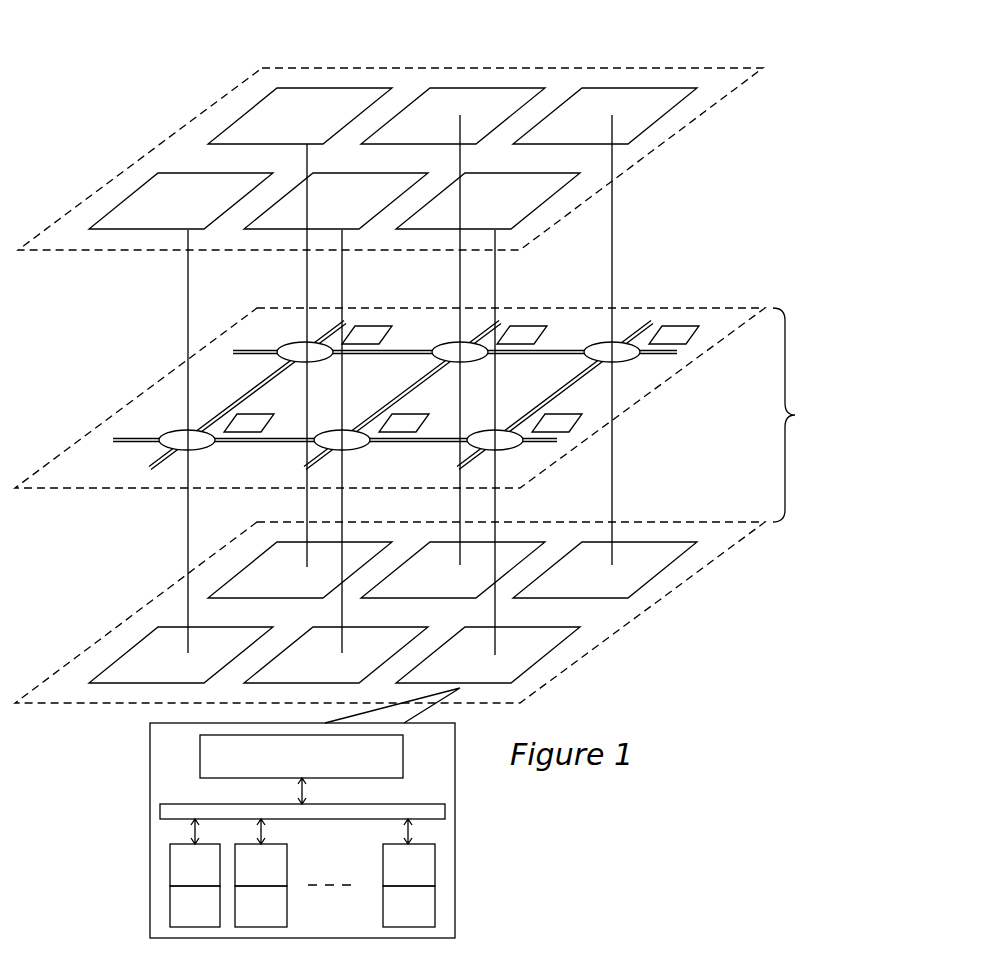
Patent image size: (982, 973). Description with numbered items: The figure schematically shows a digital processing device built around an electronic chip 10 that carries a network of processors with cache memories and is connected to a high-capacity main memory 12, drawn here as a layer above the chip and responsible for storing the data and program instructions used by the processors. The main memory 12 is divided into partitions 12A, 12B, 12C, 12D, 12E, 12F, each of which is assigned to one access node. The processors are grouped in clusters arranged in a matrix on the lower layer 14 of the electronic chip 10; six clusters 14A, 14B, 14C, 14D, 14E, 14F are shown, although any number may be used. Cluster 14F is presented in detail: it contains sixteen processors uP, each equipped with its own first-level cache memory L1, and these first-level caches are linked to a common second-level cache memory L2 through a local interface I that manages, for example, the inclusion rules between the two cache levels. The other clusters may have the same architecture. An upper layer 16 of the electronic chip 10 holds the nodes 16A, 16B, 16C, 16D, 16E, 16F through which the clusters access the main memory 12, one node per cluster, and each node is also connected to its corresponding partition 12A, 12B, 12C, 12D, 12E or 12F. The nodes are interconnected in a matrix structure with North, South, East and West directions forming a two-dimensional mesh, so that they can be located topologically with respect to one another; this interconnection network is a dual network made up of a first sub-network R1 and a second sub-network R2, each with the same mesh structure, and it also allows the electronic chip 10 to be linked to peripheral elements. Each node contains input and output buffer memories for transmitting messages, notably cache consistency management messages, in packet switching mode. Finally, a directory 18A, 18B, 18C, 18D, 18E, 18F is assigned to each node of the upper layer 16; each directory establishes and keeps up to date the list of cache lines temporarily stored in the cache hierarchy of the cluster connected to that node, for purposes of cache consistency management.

The electronic chip 10 is at (802, 415).
The main memory 12 is at (714, 68).
The partition of the main memory 12A is at (294, 139).
The partition of the main memory 12B is at (447, 139).
The partition of the main memory 12C is at (601, 139).
The partition of the main memory 12D is at (177, 224).
The partition of the main memory 12E is at (332, 224).
The partition of the main memory 12F is at (486, 224).
The lower layer 14 is at (714, 522).
The cluster 14A is at (294, 594).
The cluster 14B is at (447, 594).
The cluster 14C is at (601, 594).
The cluster 14D is at (177, 679).
The cluster 14E is at (332, 679).
The cluster 14F is at (486, 679).
The upper layer 16 is at (714, 308).
The node 16A is at (303, 344).
The node 16B is at (453, 344).
The node 16C is at (606, 344).
The node 16D is at (158, 447).
The node 16E is at (312, 447).
The node 16F is at (465, 447).
The directory 18A is at (377, 326).
The directory 18B is at (532, 326).
The directory 18C is at (685, 326).
The directory 18D is at (252, 414).
The directory 18E is at (405, 414).
The directory 18F is at (557, 414).
The first sub-network R1 is at (210, 417).
The second sub-network R2 is at (113, 438).
The second-level cache memory L2 is at (320, 772).
The first-level cache memory L1 is at (198, 877).
The processor uP is at (202, 919).
The local interface I is at (420, 804).